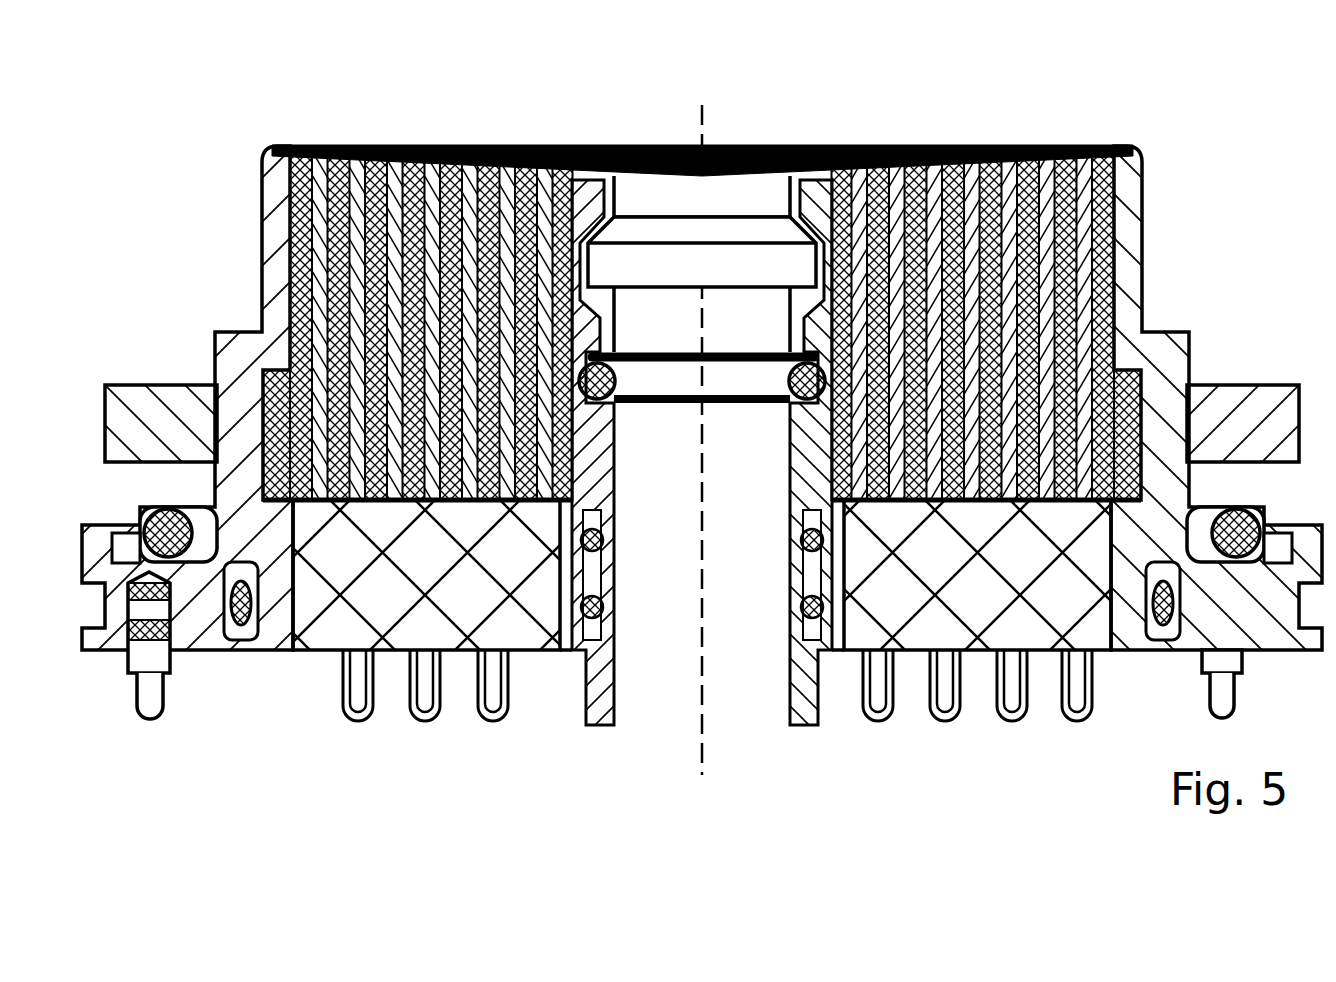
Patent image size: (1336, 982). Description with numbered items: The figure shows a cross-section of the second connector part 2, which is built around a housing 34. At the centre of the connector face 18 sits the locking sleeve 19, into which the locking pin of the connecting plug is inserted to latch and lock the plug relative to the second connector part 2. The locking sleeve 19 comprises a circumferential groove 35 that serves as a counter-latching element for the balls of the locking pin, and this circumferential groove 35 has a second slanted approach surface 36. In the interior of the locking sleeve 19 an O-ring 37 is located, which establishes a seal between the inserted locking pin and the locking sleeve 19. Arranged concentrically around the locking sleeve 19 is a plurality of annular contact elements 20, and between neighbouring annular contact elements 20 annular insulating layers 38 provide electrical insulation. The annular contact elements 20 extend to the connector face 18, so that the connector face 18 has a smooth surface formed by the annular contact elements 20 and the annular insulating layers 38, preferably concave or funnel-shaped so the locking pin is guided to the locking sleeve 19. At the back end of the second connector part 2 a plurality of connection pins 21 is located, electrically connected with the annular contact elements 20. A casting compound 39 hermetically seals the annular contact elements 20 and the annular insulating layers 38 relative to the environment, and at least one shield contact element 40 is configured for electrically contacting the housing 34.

The second connector part 2 is at (1102, 107).
The connector face 18 is at (478, 146).
The locking sleeve 19 is at (600, 681).
The annular contact elements 20 is at (292, 176).
The connection pins 21 is at (493, 698).
The housing 34 is at (1135, 248).
The circumferential groove 35 is at (593, 263).
The second slanted approach surface 36 is at (790, 230).
The O-ring 37 is at (620, 383).
The annular insulating layers 38 is at (292, 250).
The casting compound 39 is at (347, 613).
The shield contact element 40 is at (150, 720).